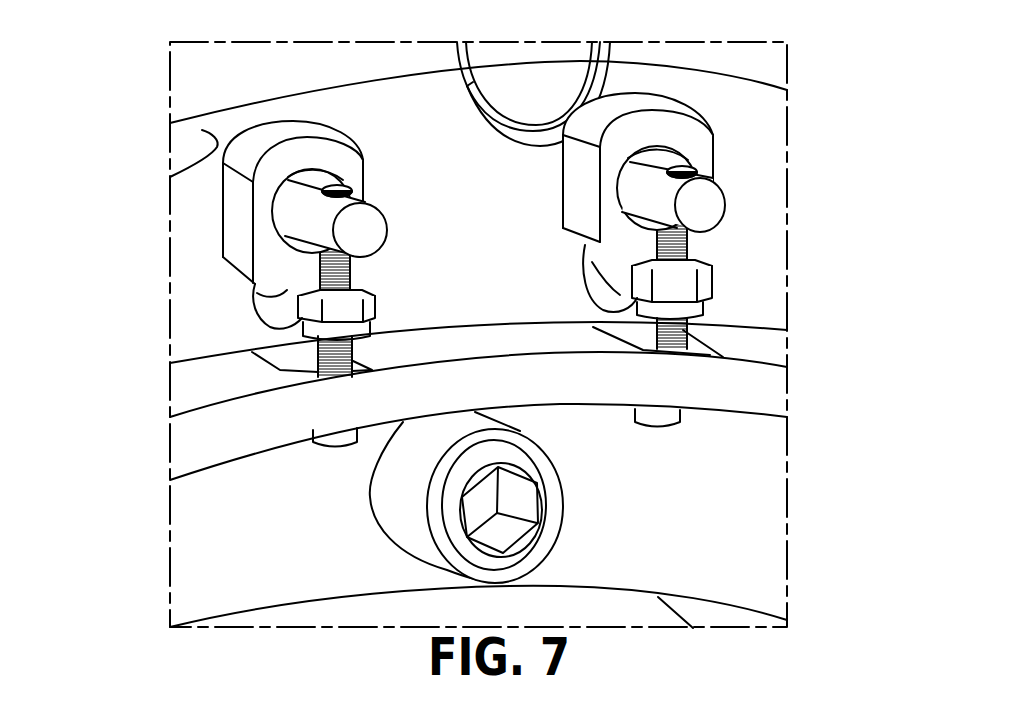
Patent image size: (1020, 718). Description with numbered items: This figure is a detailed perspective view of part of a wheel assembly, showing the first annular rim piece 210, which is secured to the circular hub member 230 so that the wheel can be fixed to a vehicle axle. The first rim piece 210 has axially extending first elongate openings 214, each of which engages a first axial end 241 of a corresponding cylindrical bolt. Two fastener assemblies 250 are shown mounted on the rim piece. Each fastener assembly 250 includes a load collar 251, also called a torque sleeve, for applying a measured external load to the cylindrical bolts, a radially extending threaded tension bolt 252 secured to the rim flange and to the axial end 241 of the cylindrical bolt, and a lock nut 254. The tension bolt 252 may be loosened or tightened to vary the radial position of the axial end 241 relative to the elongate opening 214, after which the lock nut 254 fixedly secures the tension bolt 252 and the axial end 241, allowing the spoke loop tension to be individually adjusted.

The first annular rim piece 210 is at (200, 163).
The first elongate openings 214 is at (592, 264).
The circular hub member 230 is at (637, 612).
The first axial end 241 is at (370, 225).
The fastener assembly 250 is at (203, 343).
The load collar 251 is at (266, 236).
The tension bolt 252 is at (313, 342).
The lock nut 254 is at (633, 281).